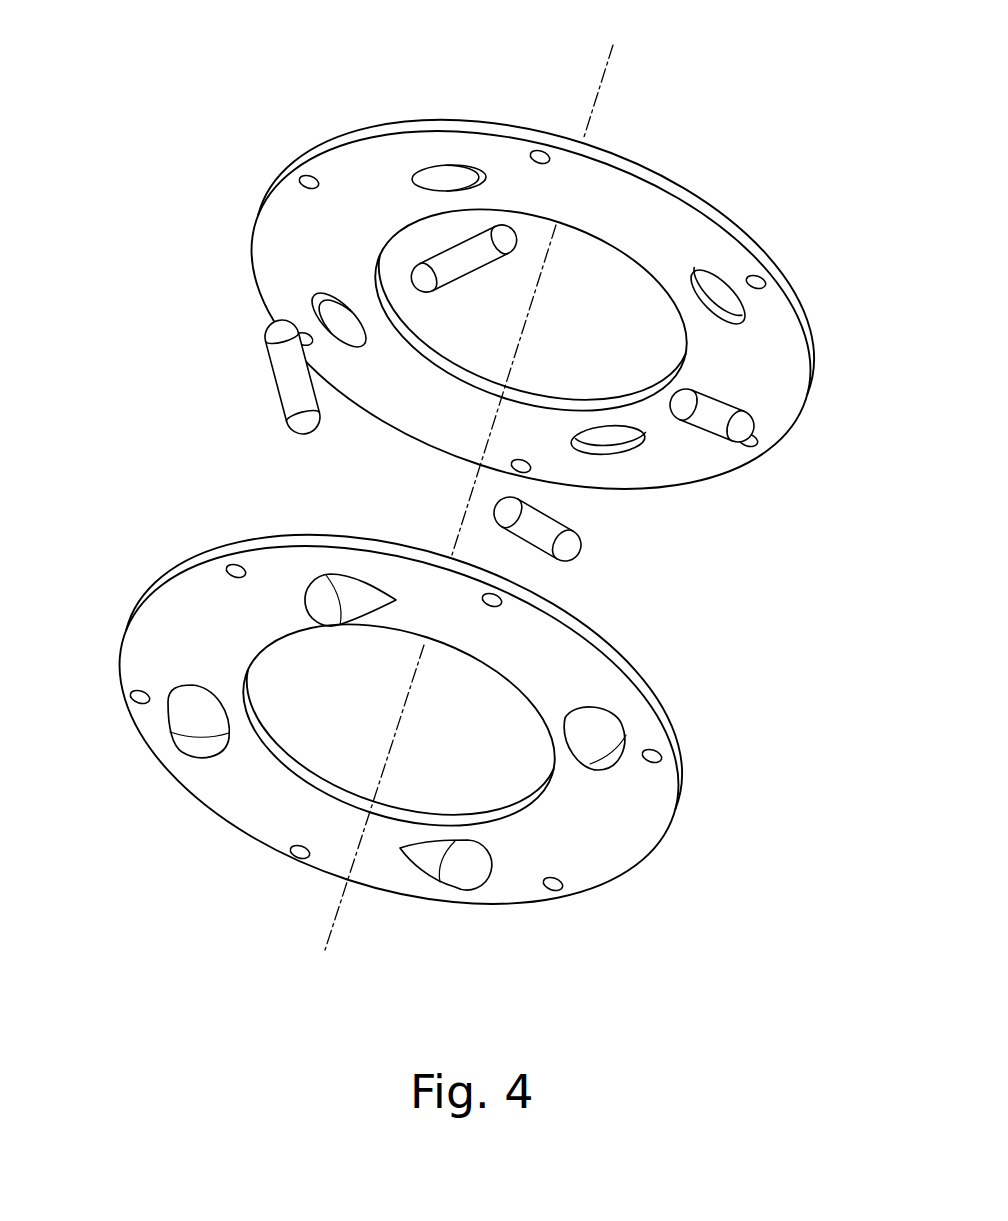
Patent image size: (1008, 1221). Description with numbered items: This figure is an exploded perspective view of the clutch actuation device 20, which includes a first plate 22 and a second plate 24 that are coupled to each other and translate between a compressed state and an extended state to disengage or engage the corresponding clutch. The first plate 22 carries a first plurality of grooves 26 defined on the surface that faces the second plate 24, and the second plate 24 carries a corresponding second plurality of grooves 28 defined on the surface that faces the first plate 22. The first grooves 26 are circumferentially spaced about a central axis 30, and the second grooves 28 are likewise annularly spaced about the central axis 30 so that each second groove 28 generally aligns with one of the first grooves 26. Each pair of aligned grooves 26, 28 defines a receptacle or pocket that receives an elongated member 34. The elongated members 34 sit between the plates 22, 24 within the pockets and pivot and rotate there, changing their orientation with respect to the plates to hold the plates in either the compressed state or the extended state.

The clutch actuation device 20 is at (110, 546).
The first plate 22 is at (600, 685).
The second plate 24 is at (650, 198).
The first plurality of grooves 26 is at (323, 592).
The second plurality of grooves 28 is at (442, 176).
The central axis 30 is at (610, 60).
The elongated member 34 is at (447, 258).